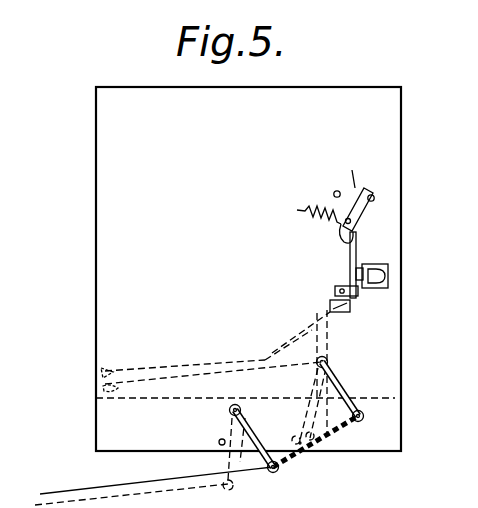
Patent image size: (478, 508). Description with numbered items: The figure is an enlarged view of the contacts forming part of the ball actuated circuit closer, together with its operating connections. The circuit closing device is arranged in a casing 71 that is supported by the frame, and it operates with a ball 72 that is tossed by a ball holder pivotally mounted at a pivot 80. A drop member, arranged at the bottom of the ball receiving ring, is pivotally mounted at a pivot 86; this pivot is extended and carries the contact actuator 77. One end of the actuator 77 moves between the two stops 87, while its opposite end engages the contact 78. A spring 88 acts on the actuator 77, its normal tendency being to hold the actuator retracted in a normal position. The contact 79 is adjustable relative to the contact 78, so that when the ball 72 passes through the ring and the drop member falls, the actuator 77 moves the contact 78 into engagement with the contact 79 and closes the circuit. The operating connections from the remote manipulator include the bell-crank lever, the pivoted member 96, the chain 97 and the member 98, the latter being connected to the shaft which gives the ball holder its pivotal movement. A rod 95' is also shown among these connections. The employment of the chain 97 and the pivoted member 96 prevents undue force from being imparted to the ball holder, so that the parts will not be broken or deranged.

The casing 71 is at (89, 377).
The ball 72 is at (11, 347).
The contact actuator 77 is at (355, 167).
The contact 78 is at (350, 263).
The contact 79 is at (358, 264).
The pivot 80 is at (329, 359).
The pivot 86 is at (363, 214).
The stops 87 is at (334, 192).
The spring 88 is at (324, 239).
The pivoted member 96 is at (258, 439).
The chain 97 is at (300, 452).
The member 98 is at (350, 393).
The rod 95' is at (134, 472).